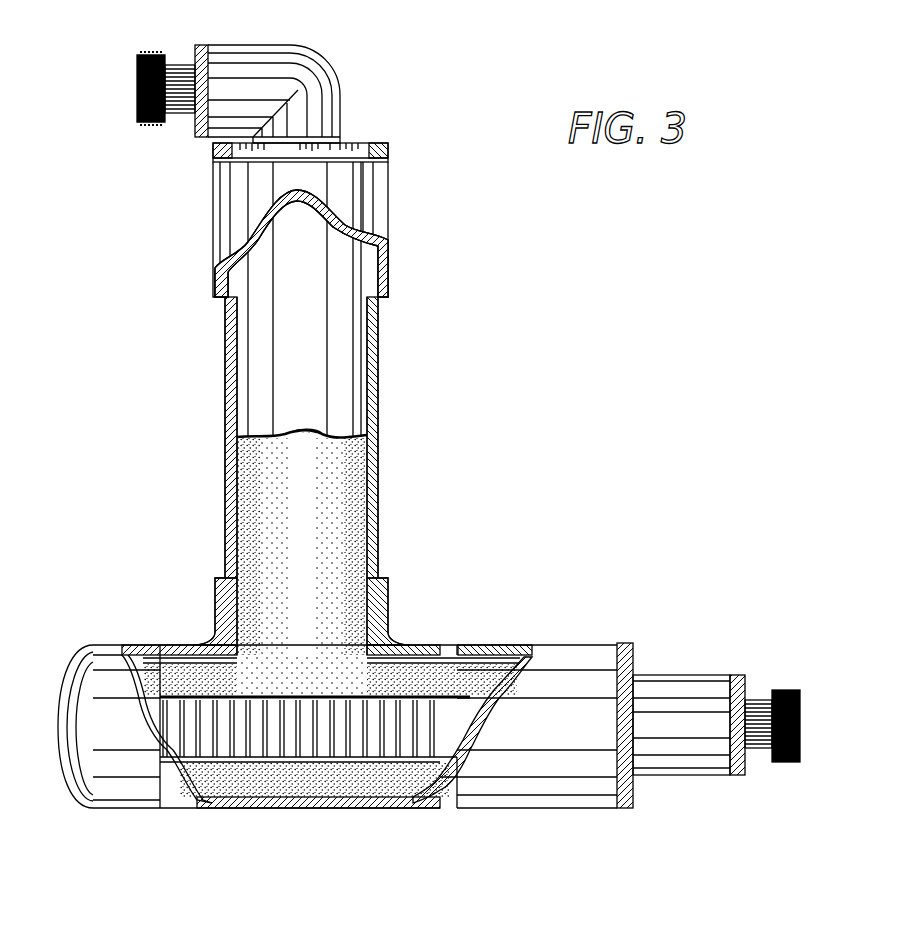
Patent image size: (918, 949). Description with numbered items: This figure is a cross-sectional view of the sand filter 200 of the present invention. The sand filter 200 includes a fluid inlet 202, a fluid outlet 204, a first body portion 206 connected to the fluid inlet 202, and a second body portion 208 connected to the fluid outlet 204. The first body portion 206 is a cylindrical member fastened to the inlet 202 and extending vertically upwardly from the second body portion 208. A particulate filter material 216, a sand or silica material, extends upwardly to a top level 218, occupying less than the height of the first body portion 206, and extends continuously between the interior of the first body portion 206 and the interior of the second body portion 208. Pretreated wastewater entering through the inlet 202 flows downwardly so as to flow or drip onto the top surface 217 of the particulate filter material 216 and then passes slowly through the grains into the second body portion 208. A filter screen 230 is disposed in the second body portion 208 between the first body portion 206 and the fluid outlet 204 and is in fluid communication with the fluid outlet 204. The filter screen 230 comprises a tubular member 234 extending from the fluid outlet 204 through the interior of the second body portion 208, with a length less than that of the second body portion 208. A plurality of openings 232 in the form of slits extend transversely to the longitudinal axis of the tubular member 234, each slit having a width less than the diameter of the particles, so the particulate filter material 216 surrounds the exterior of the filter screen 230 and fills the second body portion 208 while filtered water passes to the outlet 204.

The sand filter 200 is at (443, 345).
The fluid inlet 202 is at (305, 45).
The fluid outlet 204 is at (775, 683).
The first body portion 206 is at (225, 383).
The second body portion 208 is at (580, 810).
The particulate filter material 216 is at (237, 520).
The top surface 217 is at (355, 437).
The top level 218 is at (117, 808).
The filter screen 230 is at (372, 808).
The openings 232 is at (327, 752).
The tubular member 234 is at (385, 688).